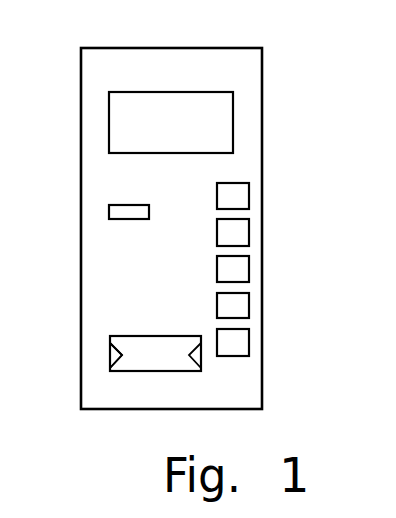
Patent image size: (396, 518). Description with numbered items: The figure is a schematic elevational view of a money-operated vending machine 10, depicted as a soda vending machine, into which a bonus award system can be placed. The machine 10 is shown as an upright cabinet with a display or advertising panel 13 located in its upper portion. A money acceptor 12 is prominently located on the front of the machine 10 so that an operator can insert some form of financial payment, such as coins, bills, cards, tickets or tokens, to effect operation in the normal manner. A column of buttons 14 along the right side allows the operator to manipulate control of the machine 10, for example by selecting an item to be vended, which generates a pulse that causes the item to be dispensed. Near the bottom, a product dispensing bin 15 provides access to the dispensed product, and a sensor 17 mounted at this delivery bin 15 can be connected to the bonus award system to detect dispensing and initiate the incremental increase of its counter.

The vending machine 10 is at (262, 67).
The money acceptor 12 is at (125, 205).
The display or advertising panel 13 is at (233, 110).
The buttons 14 is at (250, 198).
The product dispensing bin 15 is at (192, 371).
The sensor 17 is at (122, 357).